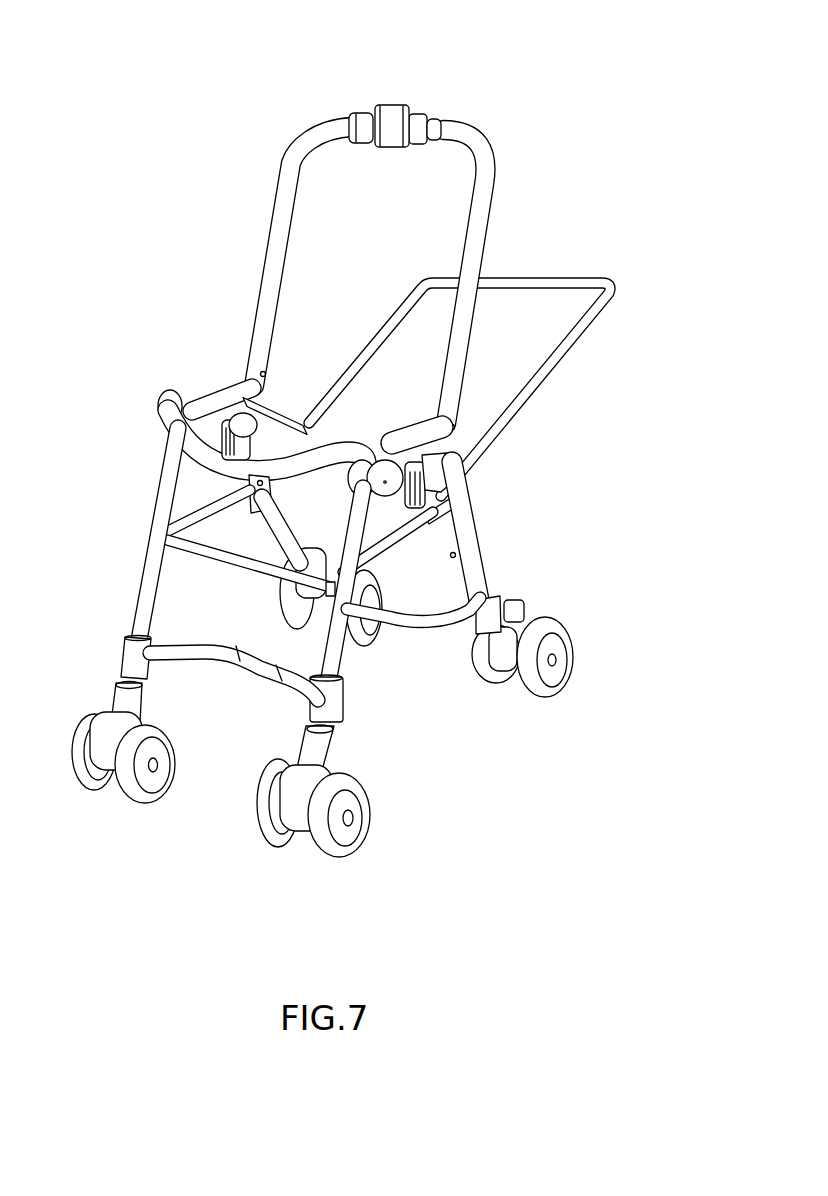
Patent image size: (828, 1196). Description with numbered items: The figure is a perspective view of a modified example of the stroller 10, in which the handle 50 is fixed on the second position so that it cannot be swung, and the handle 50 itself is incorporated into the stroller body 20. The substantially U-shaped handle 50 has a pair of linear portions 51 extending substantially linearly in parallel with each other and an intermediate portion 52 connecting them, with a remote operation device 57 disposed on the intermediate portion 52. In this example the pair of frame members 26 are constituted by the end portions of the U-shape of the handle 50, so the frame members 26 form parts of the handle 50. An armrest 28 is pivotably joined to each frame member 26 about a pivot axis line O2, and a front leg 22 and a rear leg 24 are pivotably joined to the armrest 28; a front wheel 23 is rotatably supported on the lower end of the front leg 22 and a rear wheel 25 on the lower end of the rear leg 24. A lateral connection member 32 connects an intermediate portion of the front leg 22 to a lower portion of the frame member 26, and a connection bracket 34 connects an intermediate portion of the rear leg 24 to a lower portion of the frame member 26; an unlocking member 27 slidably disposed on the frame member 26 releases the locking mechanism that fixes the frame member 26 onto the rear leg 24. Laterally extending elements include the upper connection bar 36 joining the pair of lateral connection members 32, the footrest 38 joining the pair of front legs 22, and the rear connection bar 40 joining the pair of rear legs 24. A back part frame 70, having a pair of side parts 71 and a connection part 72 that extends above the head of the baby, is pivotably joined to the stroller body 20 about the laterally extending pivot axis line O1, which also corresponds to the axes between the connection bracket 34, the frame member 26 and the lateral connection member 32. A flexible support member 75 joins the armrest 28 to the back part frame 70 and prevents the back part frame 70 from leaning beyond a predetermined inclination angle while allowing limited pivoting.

The stroller 10 is at (182, 233).
The stroller body 20 is at (198, 280).
The front leg 22 is at (138, 605).
The front wheel 23 is at (97, 783).
The rear leg 24 is at (277, 518).
The rear wheel 25 is at (283, 608).
The frame member 26 is at (213, 403).
The unlocking member 27 is at (453, 452).
The armrest 28 is at (222, 393).
The lateral connection member 32 is at (203, 510).
The connection bracket 34 is at (250, 443).
The upper connection bar 36 is at (237, 567).
The footrest 38 is at (240, 667).
The rear connection bar 40 is at (407, 623).
The handle 50 is at (399, 223).
The linear portion 51 is at (283, 195).
The intermediate portion 52 is at (455, 128).
The remote operation device 57 is at (388, 105).
The back part frame 70 is at (492, 348).
The side part 71 is at (390, 325).
The connection part 72 is at (450, 278).
The support member 75 is at (275, 423).
The pivot axis line O1 is at (433, 512).
The pivot axis line O2 is at (455, 427).